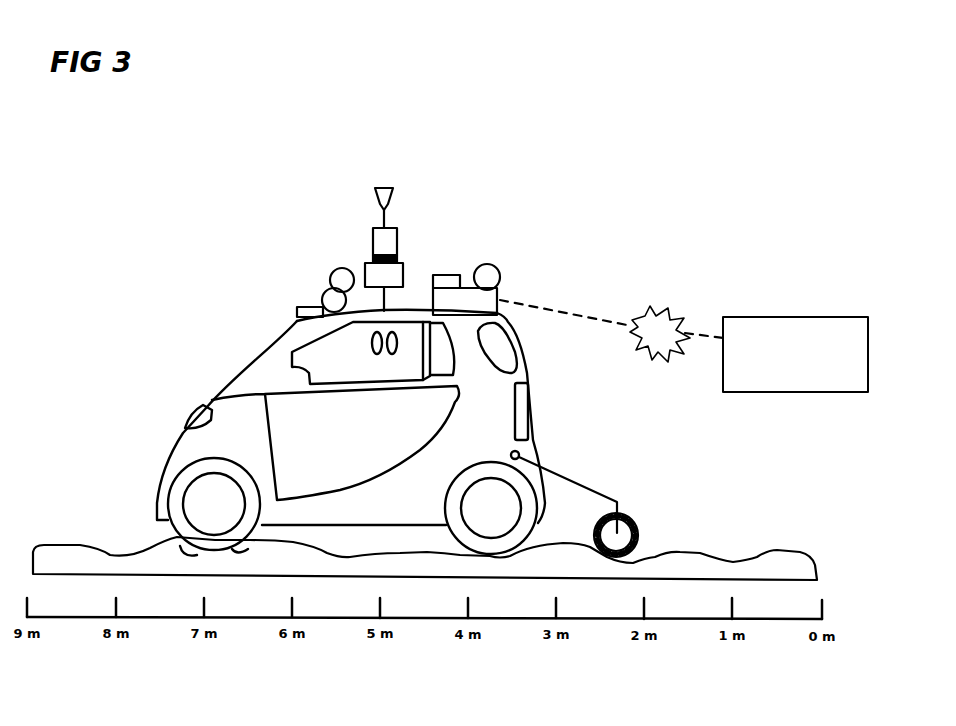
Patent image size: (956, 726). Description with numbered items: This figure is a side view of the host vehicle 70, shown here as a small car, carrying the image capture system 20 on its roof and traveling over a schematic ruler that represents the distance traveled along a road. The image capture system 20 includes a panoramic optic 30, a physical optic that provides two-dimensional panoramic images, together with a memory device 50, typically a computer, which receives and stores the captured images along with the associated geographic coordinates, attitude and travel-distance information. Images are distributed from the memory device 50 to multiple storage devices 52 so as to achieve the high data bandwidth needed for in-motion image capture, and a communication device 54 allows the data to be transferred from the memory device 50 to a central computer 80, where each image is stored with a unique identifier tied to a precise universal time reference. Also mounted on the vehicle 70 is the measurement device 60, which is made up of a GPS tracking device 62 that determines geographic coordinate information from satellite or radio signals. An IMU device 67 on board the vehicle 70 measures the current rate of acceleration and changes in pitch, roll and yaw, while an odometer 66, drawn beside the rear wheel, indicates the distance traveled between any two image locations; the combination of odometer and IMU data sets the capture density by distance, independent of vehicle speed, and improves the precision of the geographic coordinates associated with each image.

The image capture system 20 is at (437, 192).
The panoramic optic 30 is at (362, 215).
The memory device 50 is at (507, 300).
The storage devices 52 is at (447, 275).
The communication device 54 is at (488, 280).
The measurement device 60 is at (293, 305).
The GPS tracking device 62 is at (320, 295).
The odometer 66 is at (618, 520).
The IMU device 67 is at (333, 269).
The vehicle 70 is at (175, 452).
The central computer 80 is at (684, 346).